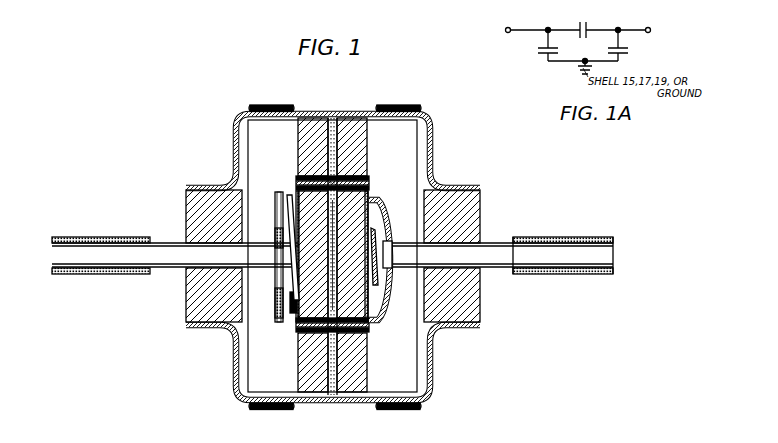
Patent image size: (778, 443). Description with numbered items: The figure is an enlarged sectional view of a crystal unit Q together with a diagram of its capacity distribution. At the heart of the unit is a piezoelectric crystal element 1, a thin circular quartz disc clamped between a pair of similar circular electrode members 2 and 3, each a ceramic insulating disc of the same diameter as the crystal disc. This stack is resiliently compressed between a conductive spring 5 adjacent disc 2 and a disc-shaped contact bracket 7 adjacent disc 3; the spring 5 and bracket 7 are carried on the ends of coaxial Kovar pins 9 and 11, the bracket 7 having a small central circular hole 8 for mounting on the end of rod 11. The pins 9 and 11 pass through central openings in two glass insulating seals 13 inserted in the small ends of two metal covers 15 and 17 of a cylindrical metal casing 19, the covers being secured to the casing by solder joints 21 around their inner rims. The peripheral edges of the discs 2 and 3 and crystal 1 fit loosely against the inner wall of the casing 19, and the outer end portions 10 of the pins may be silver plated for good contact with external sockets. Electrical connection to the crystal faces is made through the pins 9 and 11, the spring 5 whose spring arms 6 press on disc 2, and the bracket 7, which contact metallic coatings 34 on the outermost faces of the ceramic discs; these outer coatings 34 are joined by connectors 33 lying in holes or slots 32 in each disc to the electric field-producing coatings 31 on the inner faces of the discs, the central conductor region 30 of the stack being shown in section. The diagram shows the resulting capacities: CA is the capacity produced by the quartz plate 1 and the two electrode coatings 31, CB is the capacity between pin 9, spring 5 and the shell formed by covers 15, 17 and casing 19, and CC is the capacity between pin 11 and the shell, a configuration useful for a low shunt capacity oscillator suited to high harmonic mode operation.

In FIG. 1, the piezoelectric crystal element 1 is at (335, 118).
In FIG. 1, the electrode member 2 is at (306, 135).
In FIG. 1, the electrode member 3 is at (356, 149).
In FIG. 1, the spring 5 is at (276, 292).
In FIG. 1, the spring arms 6 is at (297, 202).
In FIG. 1, the contact bracket 7 is at (381, 211).
In FIG. 1, the circular hole 8 is at (393, 243).
In FIG. 1, the pin 9 is at (106, 268).
In FIG. 1A, the pin 9 is at (507, 28).
In FIG. 1, the outer end portions 10 is at (100, 237).
In FIG. 1, the pin 11 is at (505, 268).
In FIG. 1A, the pin 11 is at (649, 28).
In FIG. 1, the insulating seals 13 is at (186, 203).
In FIG. 1, the end cover 15 is at (248, 108).
In FIG. 1, the end cover 17 is at (433, 150).
In FIG. 1, the cylindrical metal casing 19 is at (282, 104).
In FIG. 1, the solder joints 21 is at (376, 104).
In FIG. 1, the through conductor 30 is at (338, 136).
In FIG. 1, the electric field-producing coatings 31 is at (342, 270).
In FIG. 1, the holes or slots 32 is at (370, 188).
In FIG. 1, the connectors 33 is at (300, 177).
In FIG. 1, the metallic coatings 34 is at (296, 250).
In FIG. 1, the capacitor assembly Q is at (195, 127).
In FIG. 1A, the capacity CA is at (587, 24).
In FIG. 1A, the capacity CB is at (538, 51).
In FIG. 1A, the capacity CC is at (628, 51).